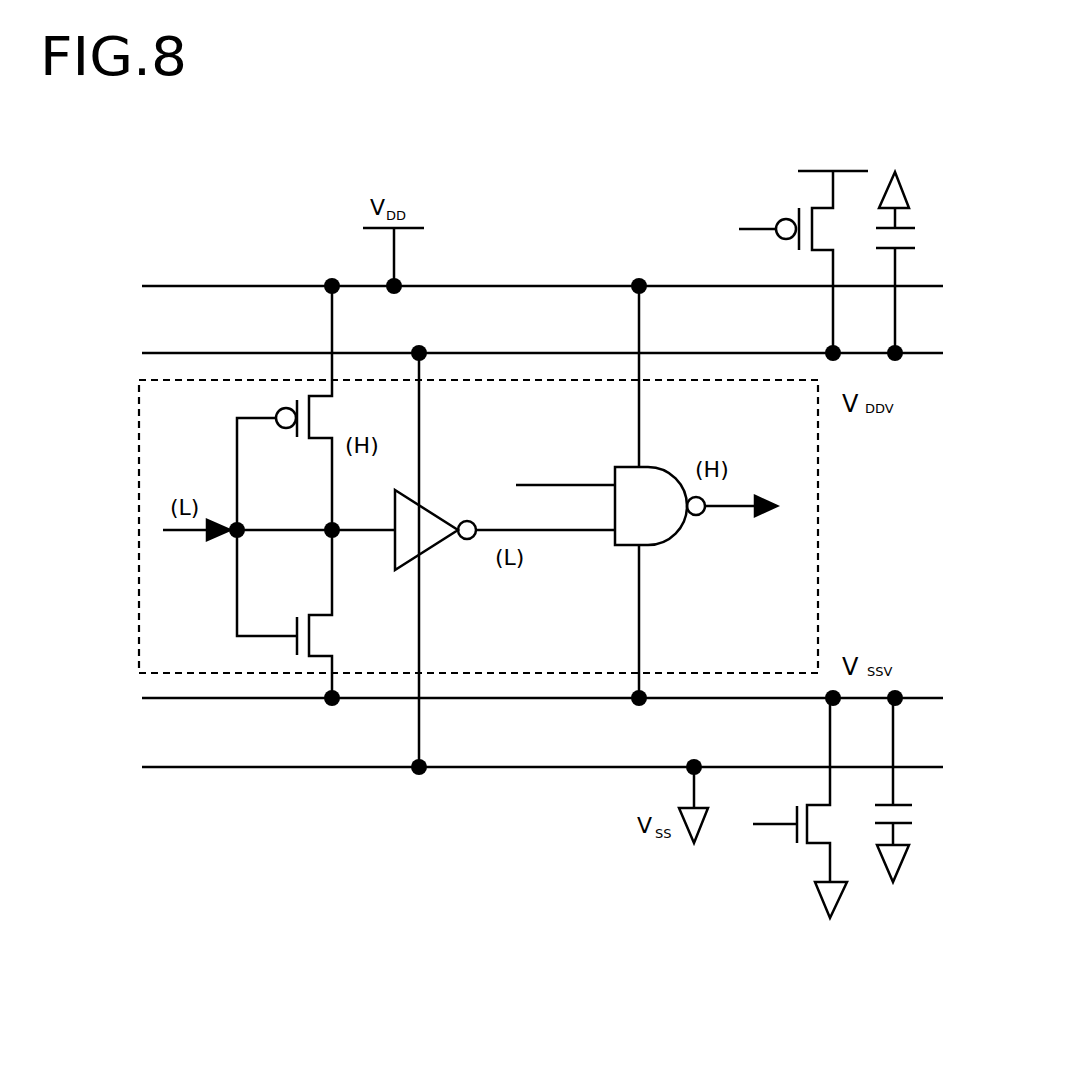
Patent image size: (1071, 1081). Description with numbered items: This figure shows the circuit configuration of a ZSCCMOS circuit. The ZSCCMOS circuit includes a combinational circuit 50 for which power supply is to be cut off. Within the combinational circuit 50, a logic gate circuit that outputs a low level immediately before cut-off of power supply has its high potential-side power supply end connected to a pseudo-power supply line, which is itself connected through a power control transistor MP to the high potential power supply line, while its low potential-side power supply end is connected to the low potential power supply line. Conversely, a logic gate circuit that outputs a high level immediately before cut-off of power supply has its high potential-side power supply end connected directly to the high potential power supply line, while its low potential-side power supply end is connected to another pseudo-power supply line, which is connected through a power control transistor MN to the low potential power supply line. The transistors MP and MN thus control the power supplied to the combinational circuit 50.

The combinational circuit 50 is at (818, 506).
The power control transistor MP is at (797, 212).
The power control transistor MN is at (790, 835).